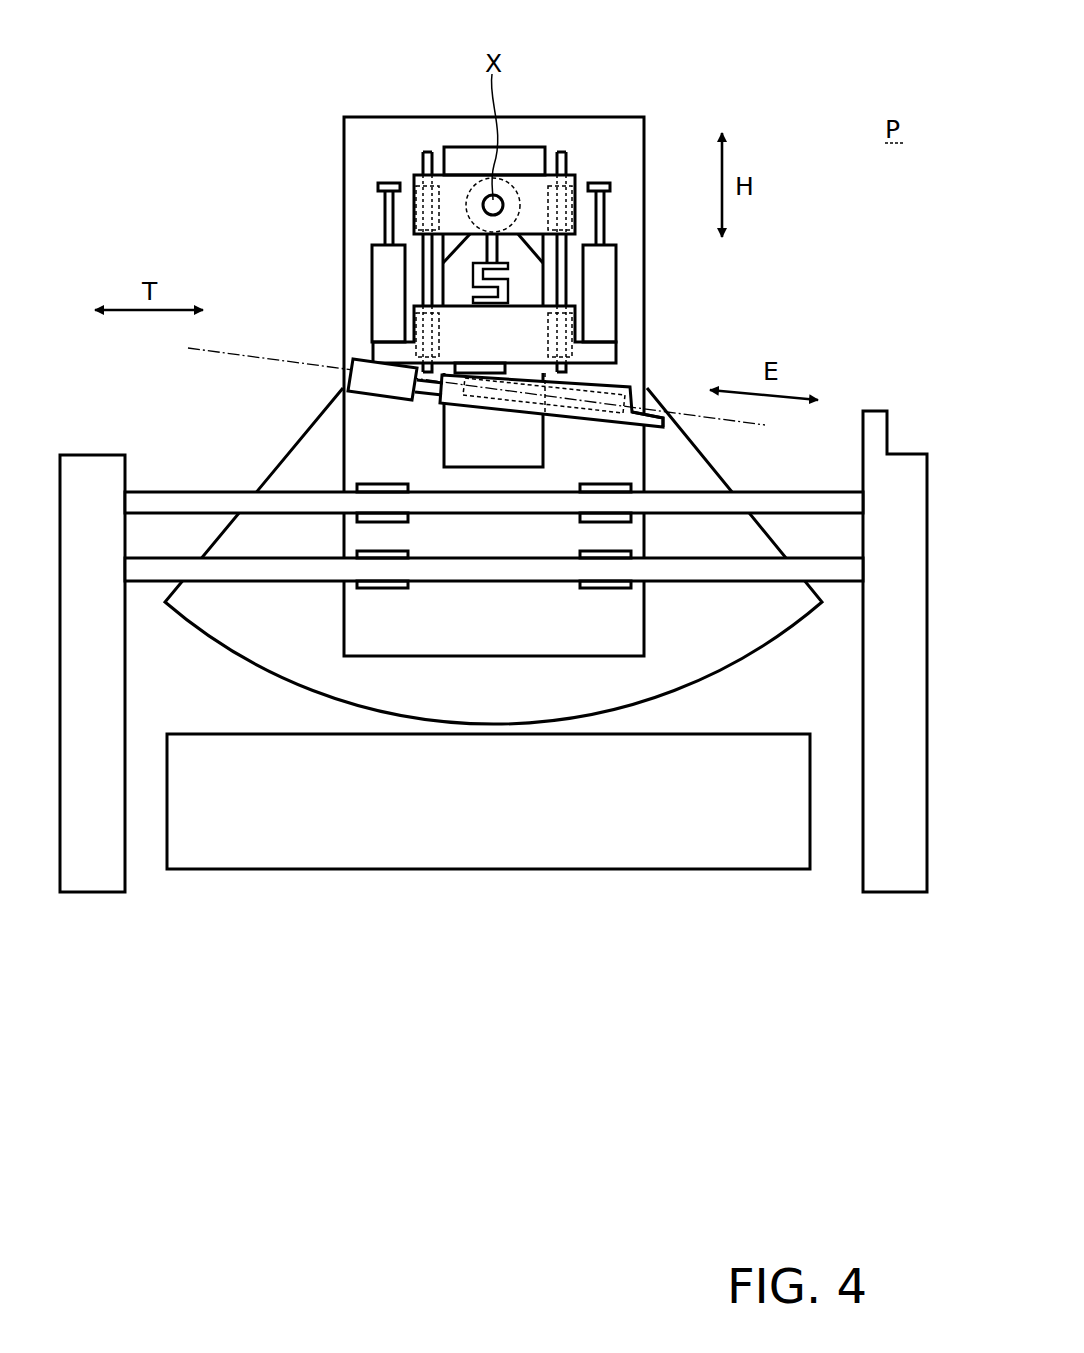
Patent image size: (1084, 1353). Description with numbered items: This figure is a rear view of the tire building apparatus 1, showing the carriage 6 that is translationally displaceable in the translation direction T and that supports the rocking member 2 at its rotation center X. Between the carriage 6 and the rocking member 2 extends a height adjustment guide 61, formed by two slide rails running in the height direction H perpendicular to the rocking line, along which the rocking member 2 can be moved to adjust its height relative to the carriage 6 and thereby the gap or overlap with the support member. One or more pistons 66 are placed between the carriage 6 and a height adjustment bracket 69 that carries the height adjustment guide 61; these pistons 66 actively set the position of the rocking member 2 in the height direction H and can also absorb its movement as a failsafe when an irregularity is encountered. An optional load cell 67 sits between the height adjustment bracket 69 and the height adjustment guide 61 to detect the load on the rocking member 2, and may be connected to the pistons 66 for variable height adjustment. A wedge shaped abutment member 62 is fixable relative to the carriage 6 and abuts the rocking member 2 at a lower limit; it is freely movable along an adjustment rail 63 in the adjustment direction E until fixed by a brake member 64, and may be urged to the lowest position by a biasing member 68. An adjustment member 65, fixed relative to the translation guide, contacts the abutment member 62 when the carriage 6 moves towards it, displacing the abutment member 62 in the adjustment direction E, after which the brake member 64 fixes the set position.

The tire building apparatus 1 is at (499, 446).
The rocking member 2 is at (293, 462).
The carriage 6 is at (370, 142).
The height adjustment guide 61 is at (432, 158).
The abutment member 62 is at (622, 388).
The adjustment rail 63 is at (640, 388).
The brake member 64 is at (553, 405).
The adjustment member 65 is at (880, 425).
The pistons 66 is at (388, 212).
The load cell 67 is at (505, 292).
The biasing member 68 is at (362, 380).
The height adjustment bracket 69 is at (380, 353).